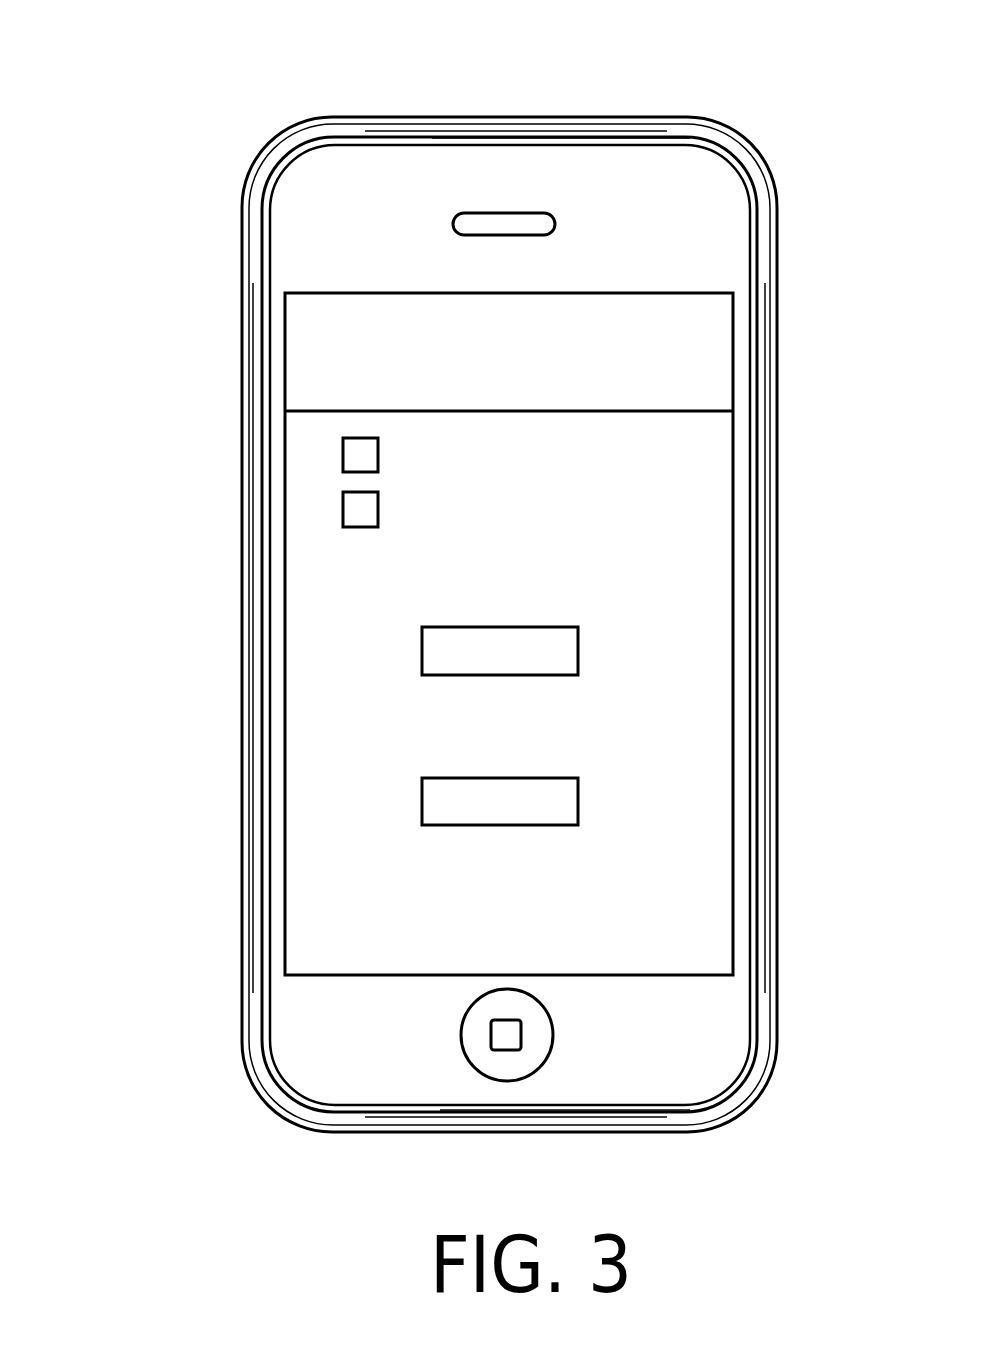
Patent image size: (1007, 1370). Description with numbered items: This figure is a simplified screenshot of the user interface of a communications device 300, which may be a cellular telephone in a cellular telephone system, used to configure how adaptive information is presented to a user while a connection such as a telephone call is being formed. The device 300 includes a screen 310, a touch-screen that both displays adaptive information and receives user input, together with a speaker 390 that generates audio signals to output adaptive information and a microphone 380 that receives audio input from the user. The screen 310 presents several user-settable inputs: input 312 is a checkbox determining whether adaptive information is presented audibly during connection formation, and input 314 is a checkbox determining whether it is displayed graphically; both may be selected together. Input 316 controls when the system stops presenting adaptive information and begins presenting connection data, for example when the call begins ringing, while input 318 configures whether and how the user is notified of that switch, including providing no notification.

The device 300 is at (132, 28).
The screen 310 is at (661, 293).
The input 312 is at (343, 447).
The input 314 is at (343, 507).
The input 316 is at (578, 641).
The input 318 is at (578, 806).
The microphone 380 is at (490, 1031).
The speaker 390 is at (477, 213).